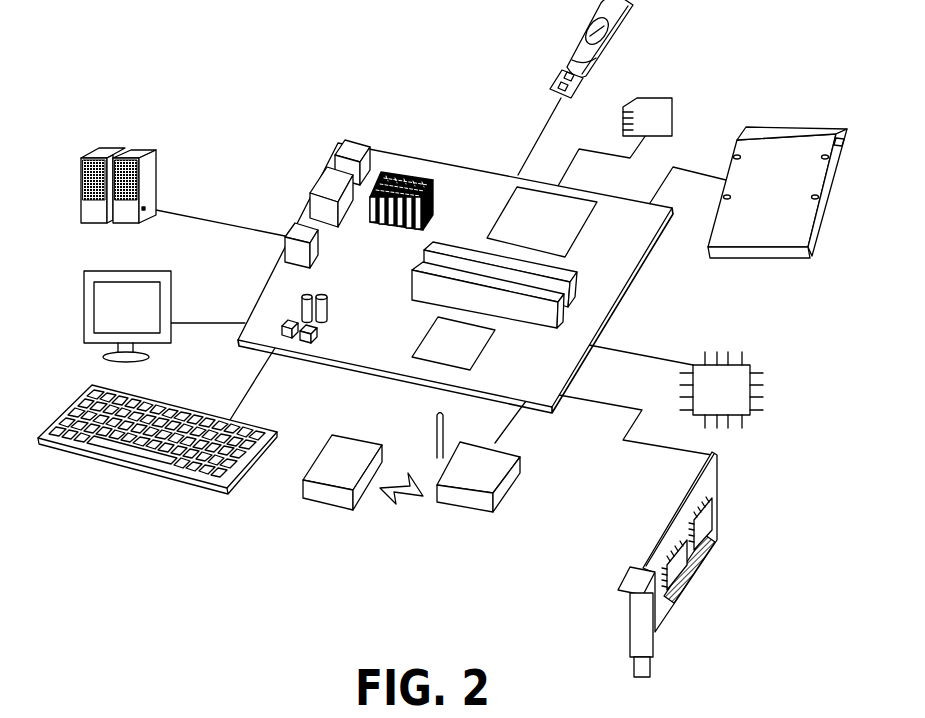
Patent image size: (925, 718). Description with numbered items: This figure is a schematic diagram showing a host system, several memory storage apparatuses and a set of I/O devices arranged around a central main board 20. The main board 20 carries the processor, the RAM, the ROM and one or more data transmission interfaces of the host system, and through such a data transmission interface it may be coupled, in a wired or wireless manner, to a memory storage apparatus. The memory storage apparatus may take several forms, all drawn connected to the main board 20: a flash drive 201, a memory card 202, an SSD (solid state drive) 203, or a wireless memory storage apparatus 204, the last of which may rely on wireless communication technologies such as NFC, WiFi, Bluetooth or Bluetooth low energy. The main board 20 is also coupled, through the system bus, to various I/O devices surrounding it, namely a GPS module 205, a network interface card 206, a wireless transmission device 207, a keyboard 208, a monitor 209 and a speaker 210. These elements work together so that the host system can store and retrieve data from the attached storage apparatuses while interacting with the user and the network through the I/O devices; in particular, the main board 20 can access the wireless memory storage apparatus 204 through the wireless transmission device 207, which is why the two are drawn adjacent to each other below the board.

The main board 20 is at (458, 183).
The flash drive 201 is at (583, 33).
The memory card 202 is at (672, 103).
The SSD (Solid State Drive) 203 is at (795, 122).
The wireless memory storage apparatus 204 is at (318, 448).
The GPS (Global Positioning System) module 205 is at (750, 388).
The network interface card 206 is at (717, 508).
The wireless transmission device 207 is at (520, 493).
The keyboard 208 is at (160, 484).
The monitor 209 is at (84, 325).
The speaker 210 is at (81, 211).